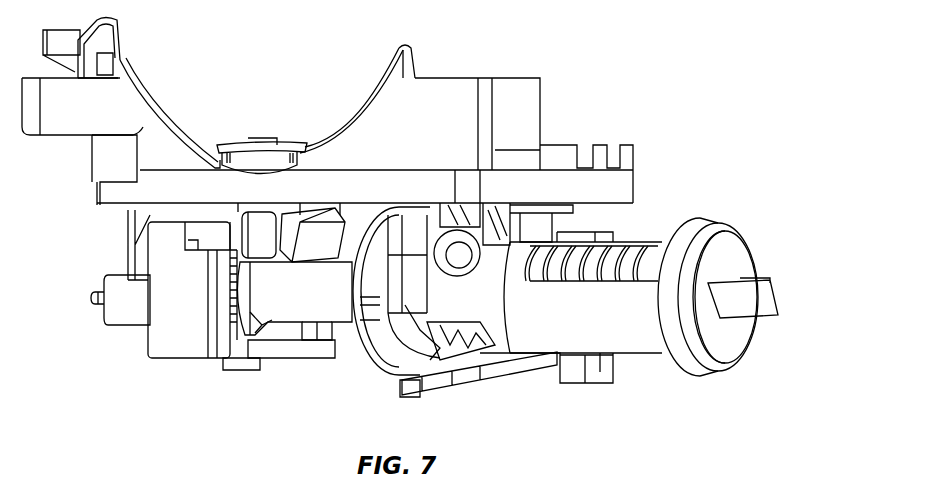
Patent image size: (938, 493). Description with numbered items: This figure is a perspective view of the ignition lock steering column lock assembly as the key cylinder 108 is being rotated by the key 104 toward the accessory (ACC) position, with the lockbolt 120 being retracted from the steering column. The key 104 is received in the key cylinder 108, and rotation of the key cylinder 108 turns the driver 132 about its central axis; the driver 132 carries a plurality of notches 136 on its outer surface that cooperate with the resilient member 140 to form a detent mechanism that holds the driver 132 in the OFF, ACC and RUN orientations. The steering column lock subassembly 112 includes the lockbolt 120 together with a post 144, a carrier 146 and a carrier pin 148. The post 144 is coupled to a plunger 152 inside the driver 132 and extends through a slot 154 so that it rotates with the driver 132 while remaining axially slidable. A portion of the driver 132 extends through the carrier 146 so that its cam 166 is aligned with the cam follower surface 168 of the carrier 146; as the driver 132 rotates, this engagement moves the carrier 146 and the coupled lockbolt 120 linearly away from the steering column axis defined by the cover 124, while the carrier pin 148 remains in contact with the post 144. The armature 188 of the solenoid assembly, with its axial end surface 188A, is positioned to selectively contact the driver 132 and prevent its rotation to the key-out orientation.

The key 104 is at (775, 283).
The key cylinder 108 is at (688, 228).
The steering column lock subassembly 112 is at (203, 400).
The lockbolt 120 is at (262, 140).
The cover 124 is at (568, 147).
The driver 132 is at (352, 330).
The notches 136 is at (416, 308).
The resilient member 140 is at (455, 325).
The post 144 is at (330, 228).
The carrier 146 is at (168, 340).
The carrier pin 148 is at (190, 232).
The plunger 152 is at (96, 300).
The slot 154 is at (325, 345).
The cam 166 is at (285, 350).
The cam follower surface 168 is at (237, 327).
The armature 188 is at (500, 382).
The axial end surface 188A is at (404, 386).